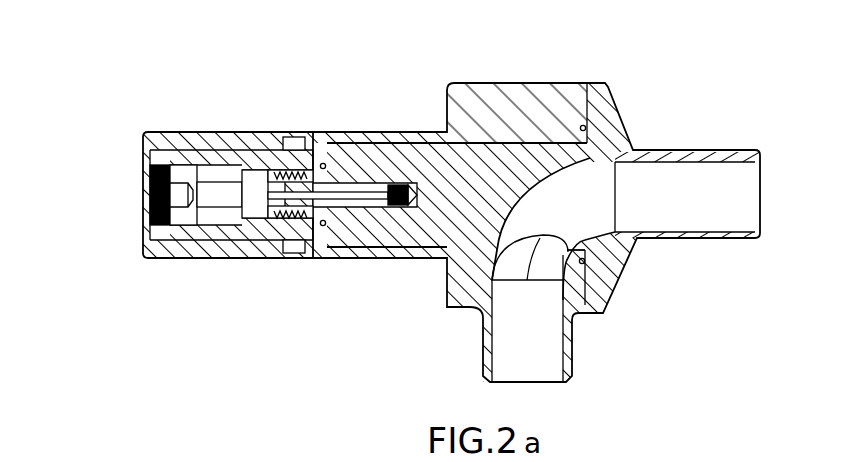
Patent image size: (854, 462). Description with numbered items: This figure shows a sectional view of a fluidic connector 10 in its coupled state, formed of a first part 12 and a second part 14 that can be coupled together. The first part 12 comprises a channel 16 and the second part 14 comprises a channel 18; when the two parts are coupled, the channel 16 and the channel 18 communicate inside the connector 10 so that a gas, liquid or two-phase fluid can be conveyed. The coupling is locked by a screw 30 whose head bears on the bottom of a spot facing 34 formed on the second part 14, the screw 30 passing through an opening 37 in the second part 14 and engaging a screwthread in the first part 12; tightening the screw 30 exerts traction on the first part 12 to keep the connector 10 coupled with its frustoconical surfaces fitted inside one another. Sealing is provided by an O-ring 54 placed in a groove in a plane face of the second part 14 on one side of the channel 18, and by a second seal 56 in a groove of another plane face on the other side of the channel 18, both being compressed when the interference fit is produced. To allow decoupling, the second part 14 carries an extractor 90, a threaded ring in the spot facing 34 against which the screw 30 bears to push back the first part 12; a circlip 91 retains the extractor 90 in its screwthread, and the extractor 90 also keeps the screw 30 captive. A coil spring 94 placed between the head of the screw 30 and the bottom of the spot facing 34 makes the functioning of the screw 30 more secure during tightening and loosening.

The fluidic connector 10 is at (666, 308).
The first part 12 is at (617, 140).
The second part 14 is at (515, 102).
The channel 16 is at (688, 206).
The channel 18 is at (510, 348).
The screw 30 is at (343, 235).
The spot facing 34 is at (248, 150).
The opening 37 is at (318, 207).
The O-ring 54 is at (319, 166).
The second seal 56 is at (586, 128).
The extractor 90 is at (170, 222).
The circlip 91 is at (142, 227).
The coil spring 94 is at (285, 222).